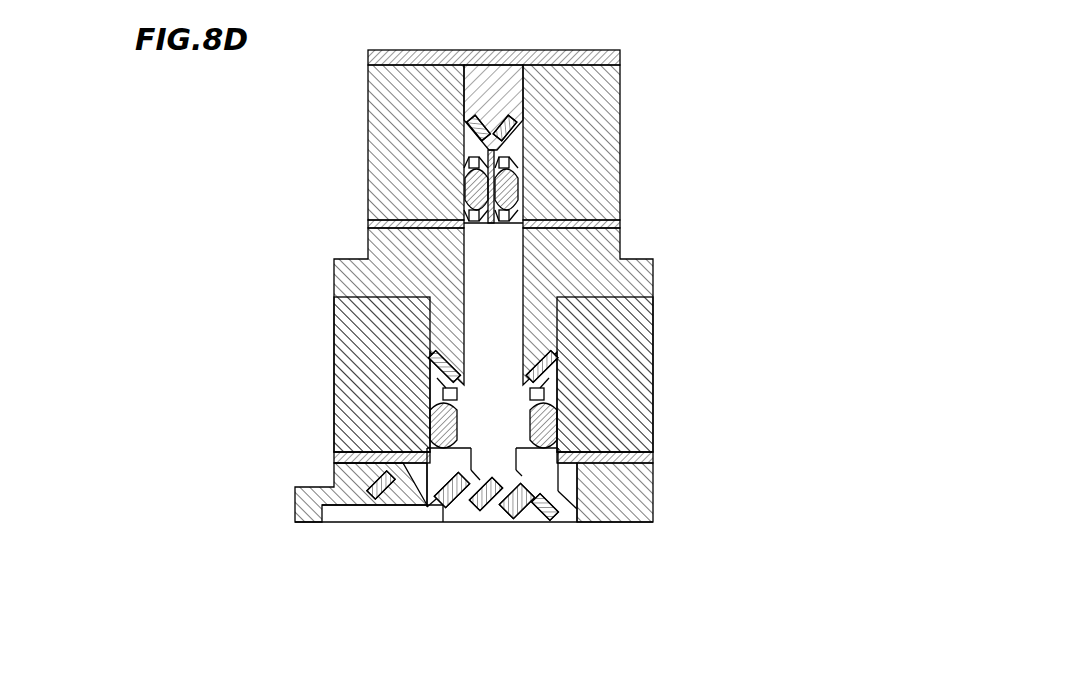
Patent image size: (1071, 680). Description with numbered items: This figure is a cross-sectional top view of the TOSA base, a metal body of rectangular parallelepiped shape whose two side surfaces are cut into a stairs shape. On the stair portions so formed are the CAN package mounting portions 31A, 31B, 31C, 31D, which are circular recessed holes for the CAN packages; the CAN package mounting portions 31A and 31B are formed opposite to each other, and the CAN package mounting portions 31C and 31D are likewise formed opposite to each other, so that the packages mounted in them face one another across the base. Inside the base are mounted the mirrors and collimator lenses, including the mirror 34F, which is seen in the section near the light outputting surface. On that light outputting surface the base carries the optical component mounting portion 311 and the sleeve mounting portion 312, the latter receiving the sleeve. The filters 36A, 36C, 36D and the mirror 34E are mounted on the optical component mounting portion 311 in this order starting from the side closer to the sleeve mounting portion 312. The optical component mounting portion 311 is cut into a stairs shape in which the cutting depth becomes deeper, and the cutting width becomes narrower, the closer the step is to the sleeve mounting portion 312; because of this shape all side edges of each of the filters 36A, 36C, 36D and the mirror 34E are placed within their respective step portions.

The CAN package mounting portion 31A is at (334, 345).
The CAN package mounting portion 31B is at (653, 360).
The CAN package mounting portion 31C is at (368, 127).
The CAN package mounting portion 31D is at (620, 120).
The mirror 34E is at (545, 510).
The mirror 34F is at (378, 484).
The filter 36A is at (455, 488).
The filter 36C is at (480, 508).
The filter 36D is at (515, 508).
The optical component mounting portion 311 is at (498, 513).
The sleeve mounting portion 312 is at (343, 516).